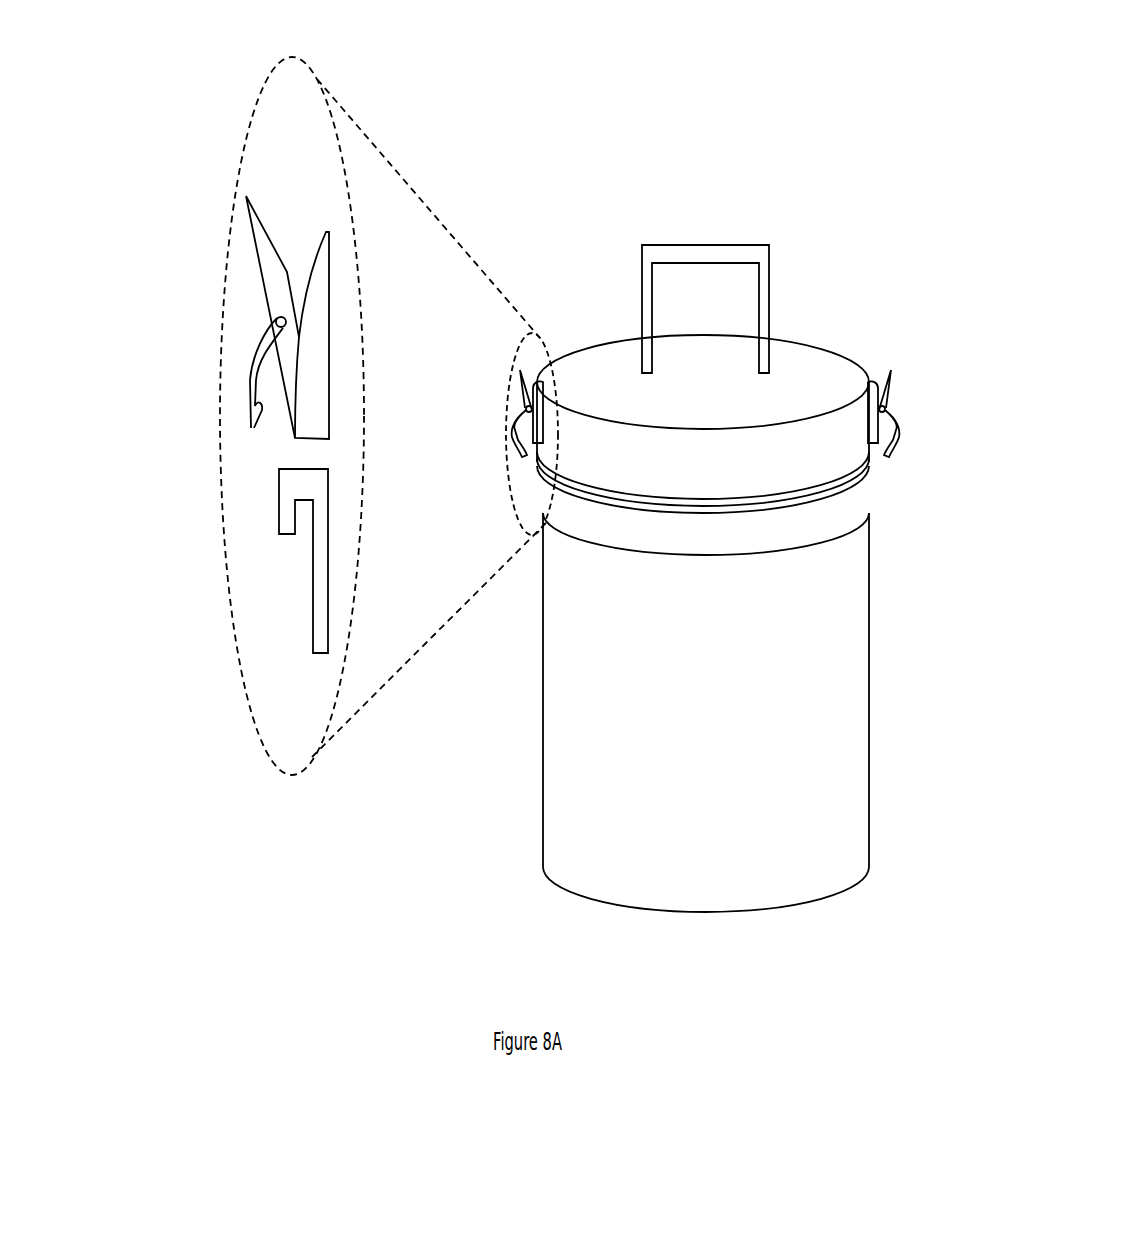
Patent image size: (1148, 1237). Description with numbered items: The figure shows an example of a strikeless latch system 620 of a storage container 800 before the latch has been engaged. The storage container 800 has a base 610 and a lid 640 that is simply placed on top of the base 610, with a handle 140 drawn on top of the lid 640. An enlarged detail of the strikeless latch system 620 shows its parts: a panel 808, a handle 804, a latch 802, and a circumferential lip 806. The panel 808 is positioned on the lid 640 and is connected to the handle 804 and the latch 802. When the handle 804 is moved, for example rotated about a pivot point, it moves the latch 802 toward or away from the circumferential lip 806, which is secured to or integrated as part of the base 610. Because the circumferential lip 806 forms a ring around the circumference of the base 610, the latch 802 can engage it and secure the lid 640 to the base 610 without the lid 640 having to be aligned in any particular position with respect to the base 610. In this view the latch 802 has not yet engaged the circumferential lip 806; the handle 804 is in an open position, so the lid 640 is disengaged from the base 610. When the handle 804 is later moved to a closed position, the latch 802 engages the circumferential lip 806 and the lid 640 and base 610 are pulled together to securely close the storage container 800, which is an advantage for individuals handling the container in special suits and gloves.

The storage container 800 is at (116, 35).
The latch 802 is at (250, 385).
The handle 804 is at (263, 260).
The circumferential lip 806 is at (283, 509).
The panel 808 is at (322, 279).
The strikeless latch system 620 is at (445, 494).
The lid 640 is at (915, 390).
The handle 140 is at (702, 245).
The base 610 is at (728, 702).